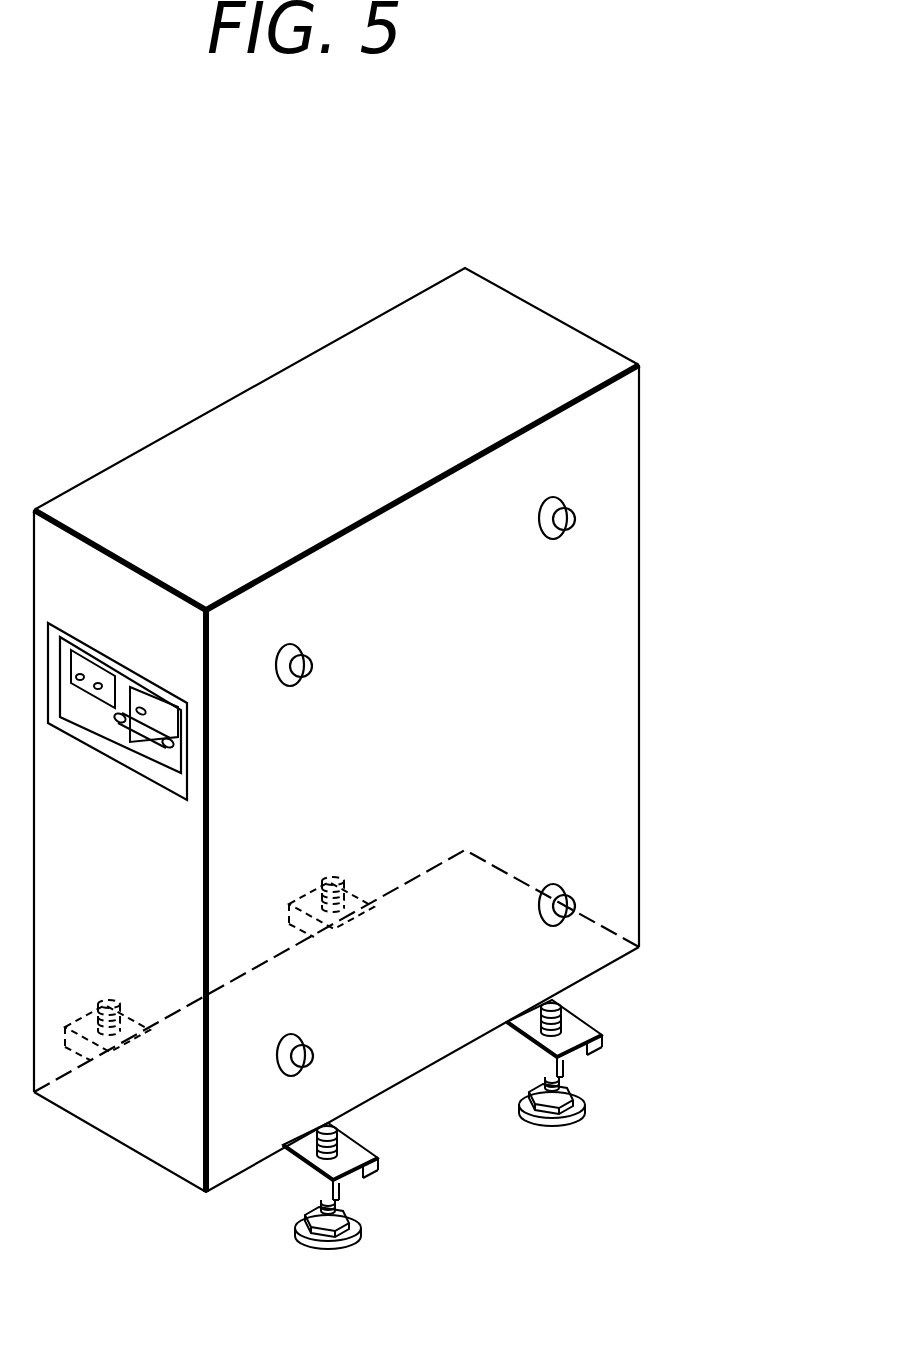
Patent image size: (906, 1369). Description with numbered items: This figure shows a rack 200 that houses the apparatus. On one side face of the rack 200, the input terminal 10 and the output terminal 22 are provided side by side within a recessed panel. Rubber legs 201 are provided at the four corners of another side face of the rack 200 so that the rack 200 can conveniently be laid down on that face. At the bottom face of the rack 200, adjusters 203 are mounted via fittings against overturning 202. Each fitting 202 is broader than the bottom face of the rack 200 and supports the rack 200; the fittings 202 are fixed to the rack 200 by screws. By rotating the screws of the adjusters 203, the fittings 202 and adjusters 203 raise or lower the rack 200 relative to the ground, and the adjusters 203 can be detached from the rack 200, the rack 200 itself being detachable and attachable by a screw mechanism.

The input terminal 10 is at (98, 680).
The output terminal 22 is at (173, 721).
The rack 200 is at (629, 735).
The rubber legs 201 is at (577, 513).
The fittings against overturning 202 is at (595, 1072).
The adjusters 203 is at (318, 1248).